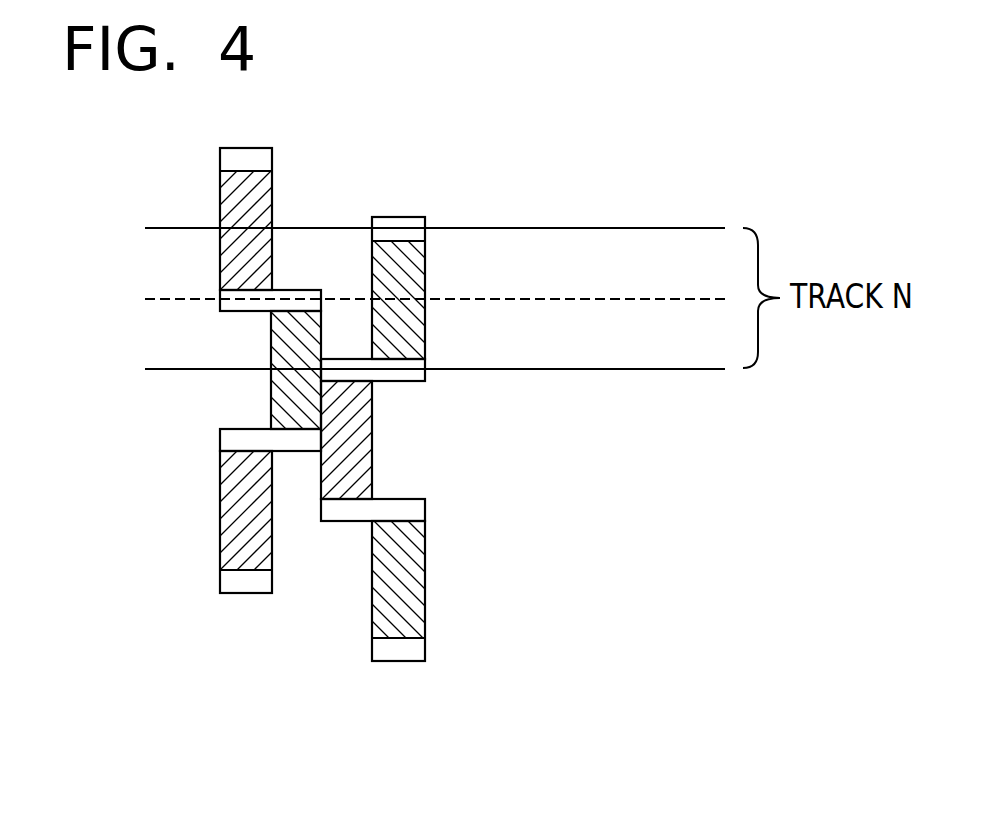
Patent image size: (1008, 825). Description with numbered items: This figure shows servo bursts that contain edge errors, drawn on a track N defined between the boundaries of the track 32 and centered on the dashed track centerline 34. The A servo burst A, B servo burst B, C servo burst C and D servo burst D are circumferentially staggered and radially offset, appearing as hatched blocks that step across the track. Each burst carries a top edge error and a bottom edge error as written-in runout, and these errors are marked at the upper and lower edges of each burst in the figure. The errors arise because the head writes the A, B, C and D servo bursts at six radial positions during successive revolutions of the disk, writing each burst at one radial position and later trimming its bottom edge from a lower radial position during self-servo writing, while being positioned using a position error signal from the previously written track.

The track 32 is at (617, 228).
The track centerline 34 is at (640, 298).
The A servo burst A is at (220, 205).
The B servo burst B is at (271, 386).
The C servo burst C is at (372, 447).
The D servo burst D is at (425, 272).